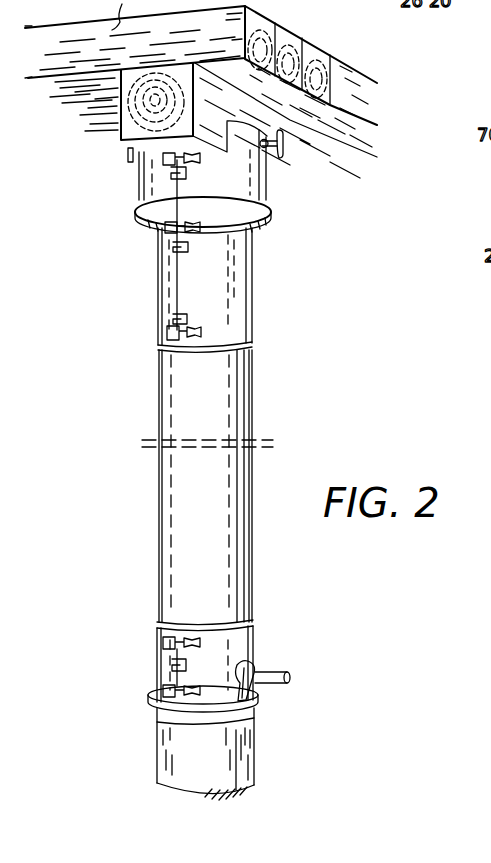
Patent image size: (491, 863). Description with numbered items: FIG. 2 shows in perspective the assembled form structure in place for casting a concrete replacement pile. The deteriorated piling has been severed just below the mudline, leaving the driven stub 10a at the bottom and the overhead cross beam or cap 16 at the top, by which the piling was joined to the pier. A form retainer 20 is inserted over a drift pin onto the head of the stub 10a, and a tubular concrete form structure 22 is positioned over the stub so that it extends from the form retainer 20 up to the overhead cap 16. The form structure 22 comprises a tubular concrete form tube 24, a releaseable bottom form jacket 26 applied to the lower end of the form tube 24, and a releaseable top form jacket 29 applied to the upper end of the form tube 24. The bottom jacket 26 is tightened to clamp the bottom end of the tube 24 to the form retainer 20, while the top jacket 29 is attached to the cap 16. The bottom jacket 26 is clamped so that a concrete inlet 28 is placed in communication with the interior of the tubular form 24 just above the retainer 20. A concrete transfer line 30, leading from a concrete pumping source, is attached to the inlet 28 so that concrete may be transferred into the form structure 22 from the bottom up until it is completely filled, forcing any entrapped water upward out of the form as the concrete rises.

The overhead cross beam or cap 16 is at (140, 123).
The tubular concrete form structure 22 is at (263, 390).
The releaseable top form jacket 29 is at (220, 318).
The tubular concrete form tube 24 is at (188, 398).
The releaseable bottom form jacket 26 is at (231, 642).
The concrete inlet 28 is at (253, 664).
The concrete transfer line 30 is at (285, 683).
The form retainer 20 is at (172, 710).
The driven stub 10a is at (190, 743).